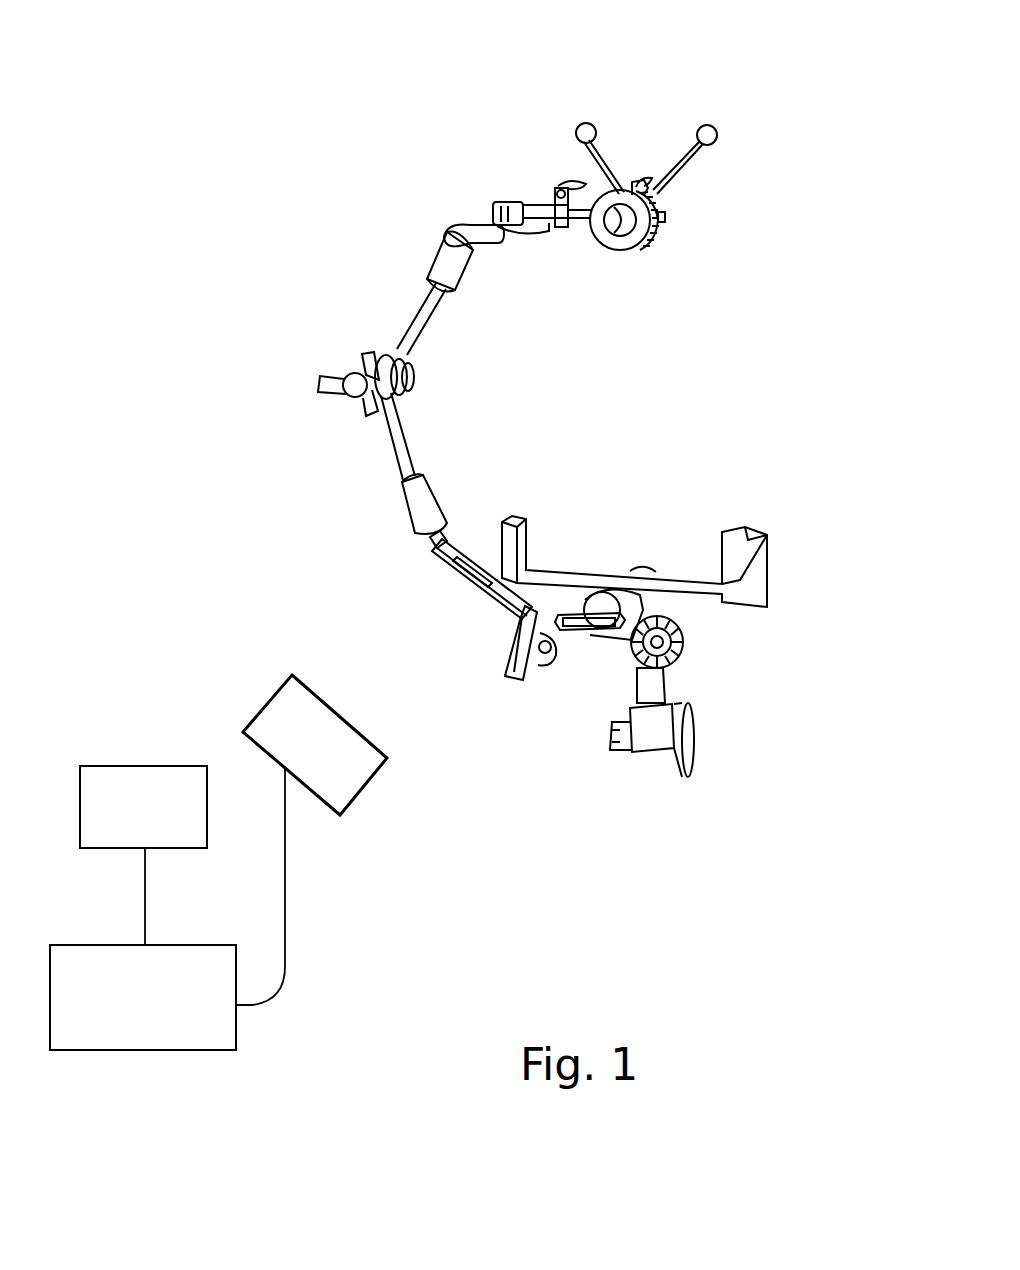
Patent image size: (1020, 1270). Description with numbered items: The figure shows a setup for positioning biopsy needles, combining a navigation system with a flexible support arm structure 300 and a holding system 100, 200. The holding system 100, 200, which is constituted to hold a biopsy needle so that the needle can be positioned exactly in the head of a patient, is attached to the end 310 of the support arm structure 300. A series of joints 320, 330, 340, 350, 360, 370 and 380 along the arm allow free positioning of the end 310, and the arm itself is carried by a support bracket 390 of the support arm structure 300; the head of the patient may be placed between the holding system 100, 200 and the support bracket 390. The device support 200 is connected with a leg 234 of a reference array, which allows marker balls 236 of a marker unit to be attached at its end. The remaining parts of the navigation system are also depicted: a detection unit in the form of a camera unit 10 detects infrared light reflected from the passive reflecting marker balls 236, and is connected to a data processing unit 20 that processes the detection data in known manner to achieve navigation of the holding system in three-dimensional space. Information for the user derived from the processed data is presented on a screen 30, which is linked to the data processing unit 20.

The camera unit 10 is at (345, 775).
The data processing unit 20 is at (162, 1038).
The screen 30 is at (132, 777).
The holding system 100 is at (680, 213).
The device support 200 is at (747, 208).
The leg of reference array 234 is at (597, 138).
The marker balls 236 is at (581, 122).
The support arm structure 300 is at (356, 301).
The end of support arm structure 310 is at (568, 228).
The joint 320 is at (556, 188).
The joint 330 is at (497, 216).
The joint 340 is at (447, 228).
The joint 350 is at (343, 407).
The joint 360 is at (423, 527).
The joint 370 is at (505, 640).
The joint 380 is at (618, 570).
The support bracket 390 is at (708, 610).